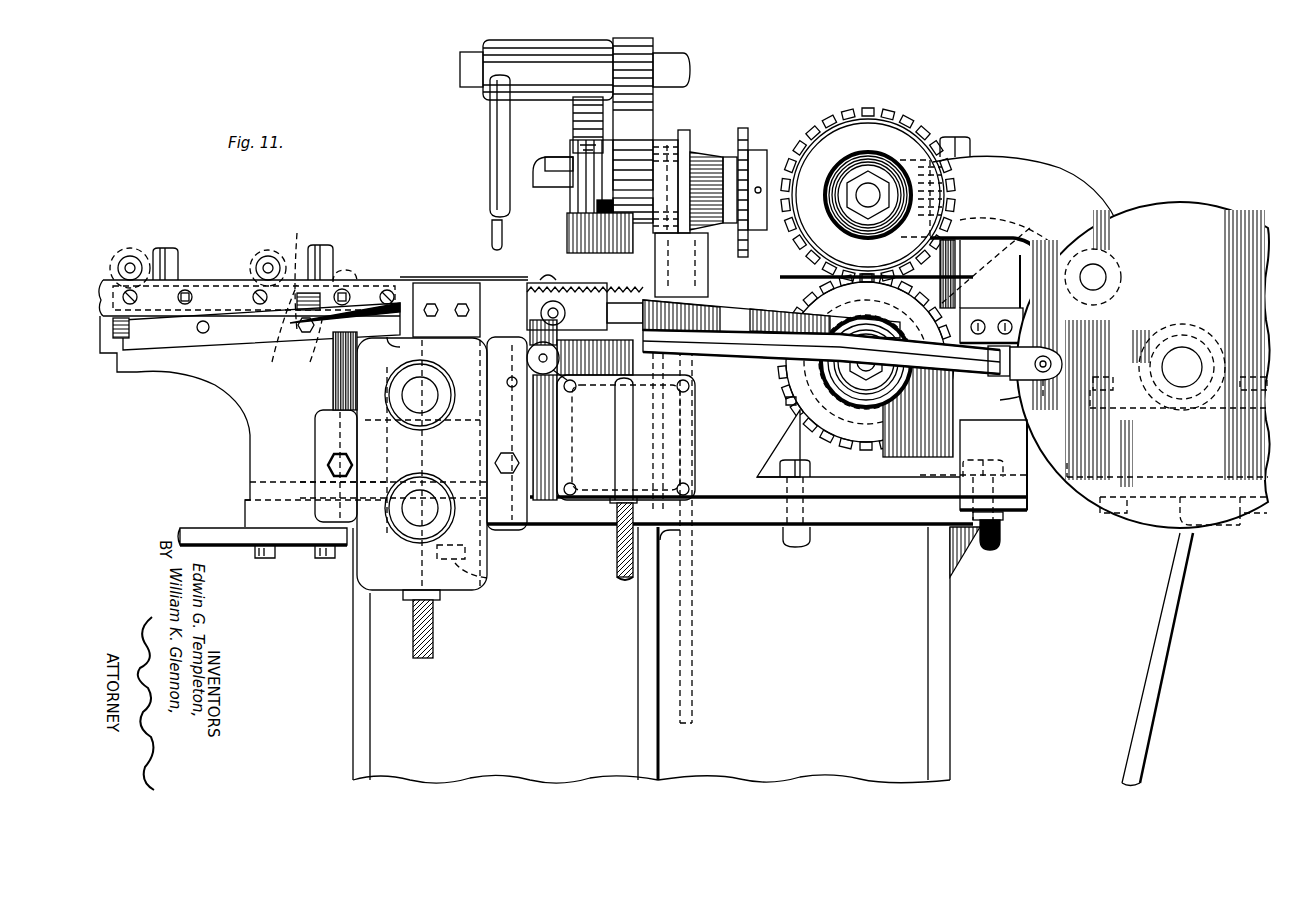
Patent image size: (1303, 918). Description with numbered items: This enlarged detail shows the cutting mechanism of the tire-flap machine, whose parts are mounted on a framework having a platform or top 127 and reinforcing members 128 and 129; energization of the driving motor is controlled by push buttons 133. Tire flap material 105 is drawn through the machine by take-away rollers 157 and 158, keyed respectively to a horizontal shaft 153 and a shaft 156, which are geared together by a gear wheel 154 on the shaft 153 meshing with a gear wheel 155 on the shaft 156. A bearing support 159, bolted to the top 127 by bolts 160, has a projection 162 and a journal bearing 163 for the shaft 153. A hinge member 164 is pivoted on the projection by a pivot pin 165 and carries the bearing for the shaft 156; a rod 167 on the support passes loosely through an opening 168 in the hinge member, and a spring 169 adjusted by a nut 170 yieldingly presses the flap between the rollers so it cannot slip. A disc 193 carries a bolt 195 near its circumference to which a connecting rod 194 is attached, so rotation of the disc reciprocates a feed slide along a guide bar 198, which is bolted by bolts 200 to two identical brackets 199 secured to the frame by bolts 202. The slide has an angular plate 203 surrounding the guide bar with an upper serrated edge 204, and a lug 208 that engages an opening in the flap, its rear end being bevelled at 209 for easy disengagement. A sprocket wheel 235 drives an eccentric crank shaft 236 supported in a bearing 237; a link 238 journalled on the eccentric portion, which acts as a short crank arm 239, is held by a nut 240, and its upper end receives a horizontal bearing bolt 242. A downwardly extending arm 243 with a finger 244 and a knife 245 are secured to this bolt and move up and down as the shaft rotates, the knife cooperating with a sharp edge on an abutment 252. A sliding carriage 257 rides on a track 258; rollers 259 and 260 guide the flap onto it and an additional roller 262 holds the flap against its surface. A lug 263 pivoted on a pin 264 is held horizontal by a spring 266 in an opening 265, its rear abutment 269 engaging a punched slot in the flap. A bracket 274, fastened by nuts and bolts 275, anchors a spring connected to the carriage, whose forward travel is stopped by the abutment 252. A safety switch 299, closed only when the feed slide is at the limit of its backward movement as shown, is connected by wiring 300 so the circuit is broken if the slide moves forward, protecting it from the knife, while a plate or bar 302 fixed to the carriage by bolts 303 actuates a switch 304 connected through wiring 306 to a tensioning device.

The tire flap material 105 is at (200, 280).
The platform or top 127 is at (735, 527).
The reinforcing member 128 is at (353, 730).
The reinforcing member 129 is at (1167, 633).
The push buttons 133 is at (435, 490).
The horizontal shaft 153 is at (895, 425).
The gear wheel 154 is at (780, 388).
The gear wheel 155 is at (845, 117).
The shaft 156 is at (870, 195).
The take-away roller 157 is at (795, 402).
The take-away roller 158 is at (903, 148).
The bearing support 159 is at (777, 450).
The bolts 160 is at (805, 547).
The projection 162 is at (1125, 318).
The journal bearing 163 is at (915, 420).
The hinge member 164 is at (1062, 168).
The pivot pin 165 is at (1121, 270).
The rod 167 is at (960, 137).
The opening 168 is at (985, 235).
The spring 169 is at (990, 190).
The nut 170 is at (965, 137).
The disc 193 is at (1160, 202).
The connecting rod 194 is at (720, 345).
The bolt 195 is at (1043, 385).
The guide bar 198 is at (760, 309).
The brackets 199 is at (465, 553).
The bolts 200 is at (1005, 320).
The bolts 202 is at (487, 573).
The angular plate 203 is at (780, 277).
The upper serrated edge 204 is at (527, 290).
The lug 208 is at (545, 278).
The bevelled rear end 209 is at (545, 283).
The sprocket wheel 235 is at (743, 128).
The eccentric crank shaft 236 is at (762, 150).
The bearing 237 is at (680, 140).
The link 238 is at (573, 125).
The short crank arm 239 is at (540, 178).
The nut 240 is at (545, 162).
The horizontal bearing bolt 242 is at (690, 68).
The downwardly extending arm 243 is at (490, 116).
The finger 244 is at (492, 226).
The knife 245 is at (615, 40).
The abutment 252 is at (545, 283).
The sliding carriage 257 is at (247, 286).
The track 258 is at (250, 437).
The rollers 259 is at (132, 262).
The rollers 260 is at (118, 262).
The additional roller 262 is at (270, 258).
The lug 263 is at (343, 270).
The pin 264 is at (345, 290).
The opening 265 is at (308, 349).
The spring 266 is at (288, 332).
The abutment 269 is at (312, 245).
The bracket 274 is at (200, 528).
The nuts and bolts 275 is at (322, 558).
The safety switch 299 is at (565, 380).
The wiring 300 is at (617, 530).
The plate or bar 302 is at (175, 350).
The bolts 303 is at (205, 334).
The switch 304 is at (385, 375).
The wiring 306 is at (433, 638).